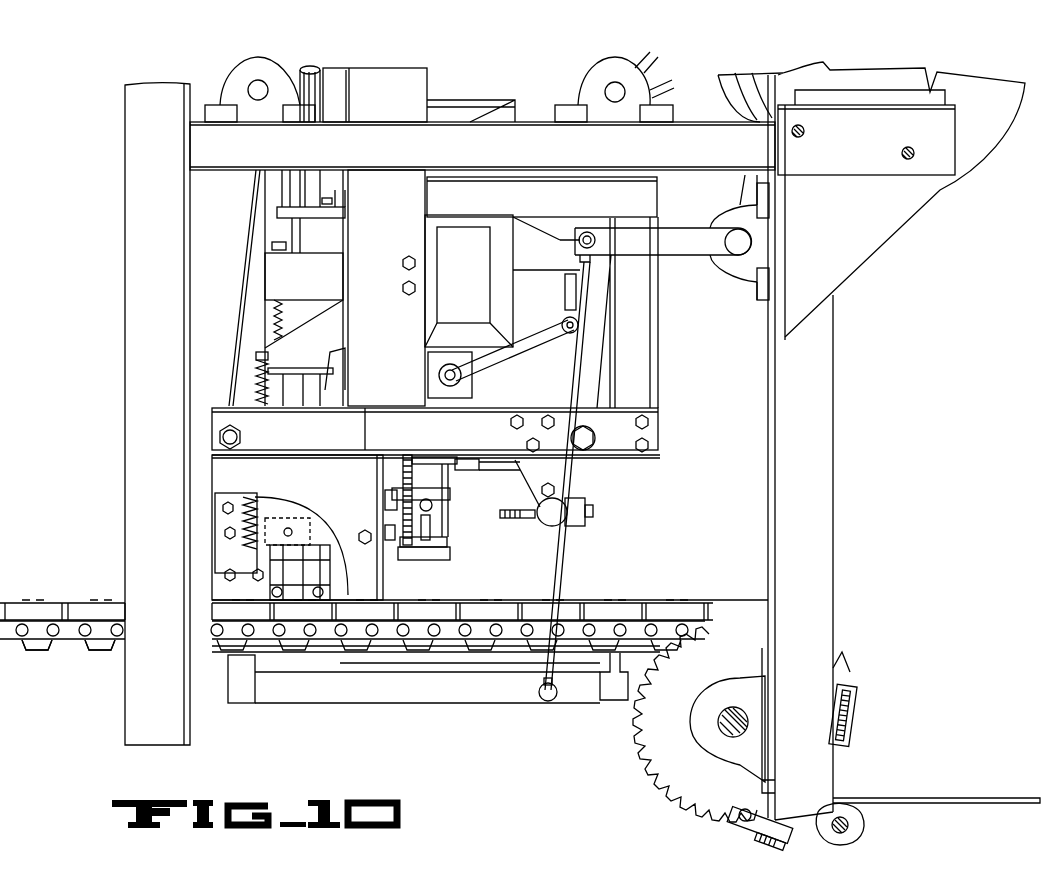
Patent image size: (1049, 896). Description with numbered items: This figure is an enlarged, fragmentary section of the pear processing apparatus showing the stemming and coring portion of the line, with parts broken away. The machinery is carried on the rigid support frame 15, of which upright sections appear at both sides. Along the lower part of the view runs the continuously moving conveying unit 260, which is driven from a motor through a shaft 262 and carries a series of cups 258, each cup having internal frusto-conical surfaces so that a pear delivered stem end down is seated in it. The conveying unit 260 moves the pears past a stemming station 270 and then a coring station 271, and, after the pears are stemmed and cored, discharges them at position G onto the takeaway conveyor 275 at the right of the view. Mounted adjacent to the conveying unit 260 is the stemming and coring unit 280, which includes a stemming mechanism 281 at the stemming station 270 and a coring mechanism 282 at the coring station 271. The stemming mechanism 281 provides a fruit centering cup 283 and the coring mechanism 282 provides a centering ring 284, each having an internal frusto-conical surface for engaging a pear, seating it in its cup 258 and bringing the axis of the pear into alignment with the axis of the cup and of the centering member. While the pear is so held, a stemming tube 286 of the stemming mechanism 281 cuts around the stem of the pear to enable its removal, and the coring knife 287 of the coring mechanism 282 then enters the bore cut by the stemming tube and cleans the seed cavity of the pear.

The rigid support frame 15 is at (120, 727).
The cup 258 is at (98, 645).
The conveying unit 260 is at (80, 553).
The shaft 262 is at (733, 738).
The stemming station 270 is at (295, 592).
The coring station 271 is at (422, 570).
The takeaway conveyor 275 is at (945, 800).
The stemming and coring unit 280 is at (222, 396).
The stemming mechanism 281 is at (270, 560).
The coring mechanism 282 is at (450, 540).
The fruit centering cup 283 is at (296, 555).
The centering ring 284 is at (445, 558).
The stemming tube 286 is at (296, 548).
The coring knife 287 is at (425, 535).